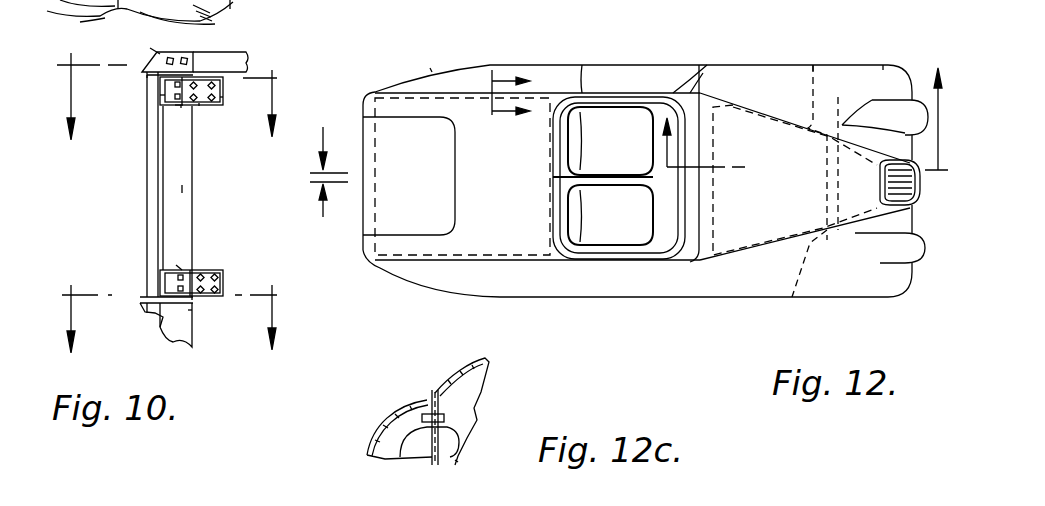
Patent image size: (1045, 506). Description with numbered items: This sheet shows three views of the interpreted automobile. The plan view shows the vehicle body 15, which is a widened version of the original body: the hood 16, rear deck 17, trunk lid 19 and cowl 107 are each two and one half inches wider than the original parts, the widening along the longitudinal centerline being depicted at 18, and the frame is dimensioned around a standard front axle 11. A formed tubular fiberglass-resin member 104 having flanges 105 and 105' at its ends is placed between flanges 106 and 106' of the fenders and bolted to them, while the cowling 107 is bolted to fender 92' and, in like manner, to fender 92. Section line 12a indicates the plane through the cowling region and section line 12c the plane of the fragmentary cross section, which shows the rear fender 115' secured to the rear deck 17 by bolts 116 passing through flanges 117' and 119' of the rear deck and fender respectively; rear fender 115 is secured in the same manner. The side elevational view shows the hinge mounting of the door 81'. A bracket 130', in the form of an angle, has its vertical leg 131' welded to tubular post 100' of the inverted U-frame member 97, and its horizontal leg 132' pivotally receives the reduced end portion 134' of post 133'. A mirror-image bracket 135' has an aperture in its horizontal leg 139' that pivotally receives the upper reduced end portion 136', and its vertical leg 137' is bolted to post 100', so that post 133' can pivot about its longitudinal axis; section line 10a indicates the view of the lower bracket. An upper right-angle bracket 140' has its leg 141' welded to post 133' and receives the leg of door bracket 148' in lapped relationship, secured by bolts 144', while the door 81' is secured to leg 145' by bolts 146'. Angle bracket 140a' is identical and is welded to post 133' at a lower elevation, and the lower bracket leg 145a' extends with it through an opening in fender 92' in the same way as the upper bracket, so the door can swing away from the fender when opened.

In FIG. 10, the door 81' is at (128, 12).
In FIG. 10, the door bracket 148' is at (71, 27).
In FIG. 10, the bracket 135' is at (122, 38).
In FIG. 10, the vertical leg 137' is at (178, 48).
In FIG. 10, the inverted U-frame member 97 is at (247, 52).
In FIG. 10, the reduced end portion 136' is at (119, 62).
In FIG. 10, the post 133' is at (139, 186).
In FIG. 10, the horizontal leg 139' is at (153, 91).
In FIG. 10, the leg 141' is at (125, 109).
In FIG. 10, the upper right-angle bracket 140' is at (134, 127).
In FIG. 10, the bolts 146' is at (245, 102).
In FIG. 10, the leg 145' is at (220, 123).
In FIG. 10, the bolts 144' is at (212, 134).
In FIG. 10, the tubular post 100' is at (220, 185).
In FIG. 10, the widened centerline portion 18 is at (310, 173).
In FIG. 10, the leg of lower door bracket 145a' is at (219, 266).
In FIG. 10, the angle bracket 140a' is at (215, 241).
In FIG. 10, the bracket 130' is at (141, 331).
In FIG. 10, the reduced end portion 134' is at (119, 321).
In FIG. 10, the vertical leg 131' is at (204, 331).
In FIG. 10, the horizontal leg 132' is at (218, 322).
In FIG. 10, the front axle 11 is at (164, 96).
In FIG. 10, the section line 10a is at (172, 319).
In FIG. 12, the fender 92 is at (645, 204).
In FIG. 12, the fender 92' is at (873, 41).
In FIG. 12, the cowl 107 is at (695, 92).
In FIG. 12, the hood 16 is at (750, 123).
In FIG. 12, the vehicle body 15 is at (715, 299).
In FIG. 12, the formed tubular fiberglass-resin member 104 is at (825, 185).
In FIG. 12, the fender flange 106 is at (794, 200).
In FIG. 12, the fender flange 106' is at (798, 57).
In FIG. 12, the flange 105' is at (847, 153).
In FIG. 12, the flange 105 is at (841, 260).
In FIG. 12, the rear deck 17 is at (520, 223).
In FIG. 12C, the rear deck 17 is at (450, 372).
In FIG. 12, the trunk lid 19 is at (425, 223).
In FIG. 12, the rear fender 115' is at (423, 44).
In FIG. 12C, the rear fender 115' is at (365, 429).
In FIG. 12, the rear fender 115 is at (462, 212).
In FIG. 12, the section line 12c is at (488, 97).
In FIG. 12, the section line 12a is at (806, 122).
In FIG. 12C, the bolts 116 is at (447, 415).
In FIG. 12C, the flange 119' is at (408, 460).
In FIG. 12C, the flange 117' is at (481, 465).